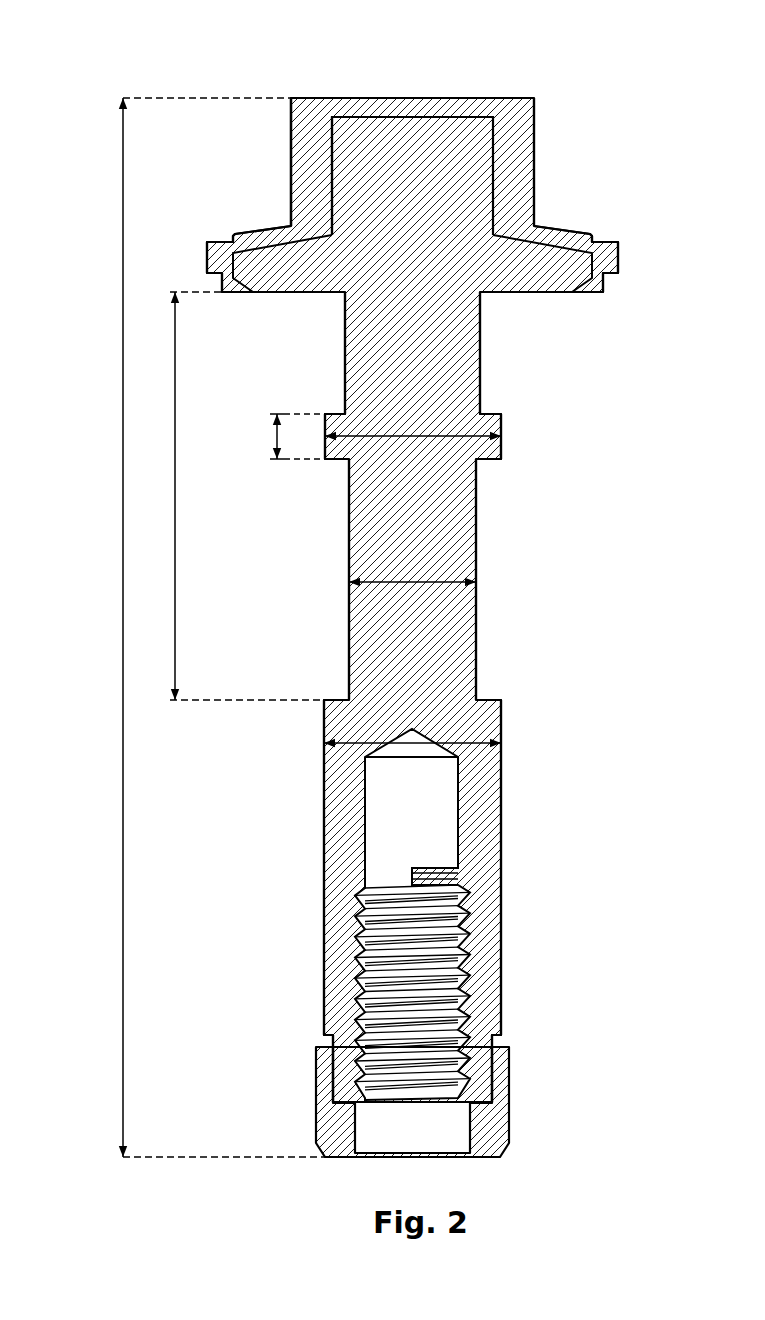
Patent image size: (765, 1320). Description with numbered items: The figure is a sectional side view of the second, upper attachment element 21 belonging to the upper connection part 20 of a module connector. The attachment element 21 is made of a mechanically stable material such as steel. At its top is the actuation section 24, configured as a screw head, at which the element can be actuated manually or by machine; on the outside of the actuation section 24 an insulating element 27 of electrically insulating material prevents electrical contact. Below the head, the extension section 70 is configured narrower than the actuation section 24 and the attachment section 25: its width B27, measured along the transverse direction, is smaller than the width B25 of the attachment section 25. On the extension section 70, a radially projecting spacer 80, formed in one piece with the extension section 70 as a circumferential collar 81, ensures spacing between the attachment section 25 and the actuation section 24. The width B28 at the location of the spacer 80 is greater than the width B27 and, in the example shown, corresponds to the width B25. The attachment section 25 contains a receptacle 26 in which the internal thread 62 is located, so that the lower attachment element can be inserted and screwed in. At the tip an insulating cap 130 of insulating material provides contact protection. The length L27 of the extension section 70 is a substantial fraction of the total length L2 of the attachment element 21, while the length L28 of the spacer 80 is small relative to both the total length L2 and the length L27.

The second, upper connection part 20 is at (221, 90).
The second, upper attachment element 21 is at (453, 82).
The insulating element 27 is at (305, 117).
The actuation section 24 is at (557, 197).
The spacer 80 is at (476, 375).
The circumferential collar 81 is at (495, 377).
The extension section 70 is at (485, 515).
The attachment section 25 is at (517, 808).
The receptacle 26 is at (430, 845).
The internal thread 62 is at (397, 967).
The insulating cap 130 is at (488, 1142).
The total length L2 is at (122, 643).
The length of the extension section L27 is at (177, 482).
The length of the spacer L28 is at (273, 438).
The width of the extension section at the spacer B28 is at (415, 435).
The width of the extension section B27 is at (415, 580).
The width of the attachment section B25 is at (455, 742).